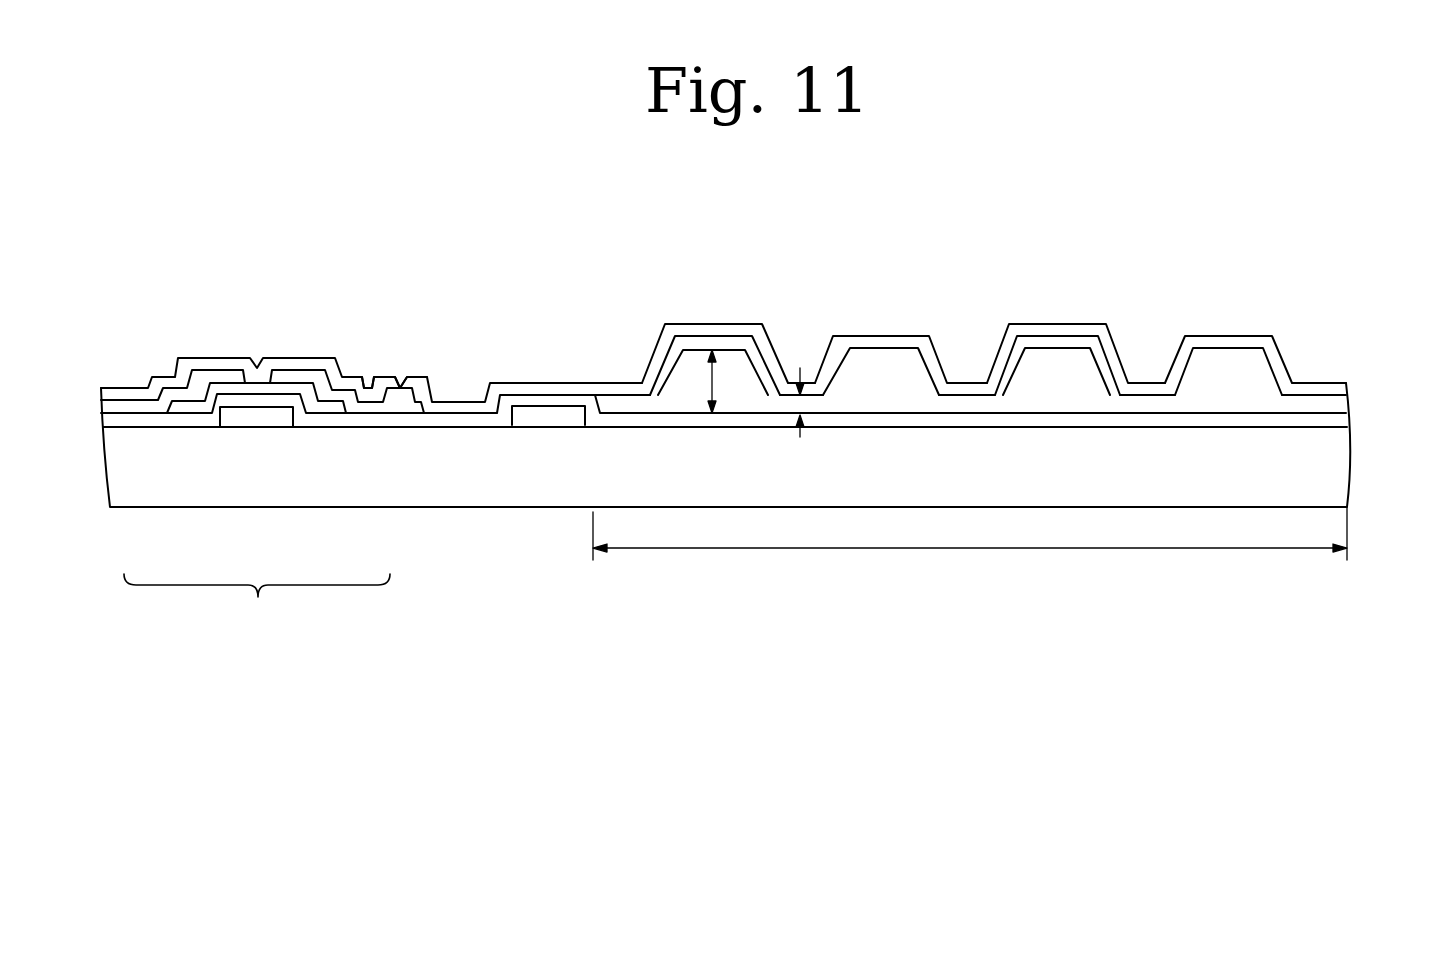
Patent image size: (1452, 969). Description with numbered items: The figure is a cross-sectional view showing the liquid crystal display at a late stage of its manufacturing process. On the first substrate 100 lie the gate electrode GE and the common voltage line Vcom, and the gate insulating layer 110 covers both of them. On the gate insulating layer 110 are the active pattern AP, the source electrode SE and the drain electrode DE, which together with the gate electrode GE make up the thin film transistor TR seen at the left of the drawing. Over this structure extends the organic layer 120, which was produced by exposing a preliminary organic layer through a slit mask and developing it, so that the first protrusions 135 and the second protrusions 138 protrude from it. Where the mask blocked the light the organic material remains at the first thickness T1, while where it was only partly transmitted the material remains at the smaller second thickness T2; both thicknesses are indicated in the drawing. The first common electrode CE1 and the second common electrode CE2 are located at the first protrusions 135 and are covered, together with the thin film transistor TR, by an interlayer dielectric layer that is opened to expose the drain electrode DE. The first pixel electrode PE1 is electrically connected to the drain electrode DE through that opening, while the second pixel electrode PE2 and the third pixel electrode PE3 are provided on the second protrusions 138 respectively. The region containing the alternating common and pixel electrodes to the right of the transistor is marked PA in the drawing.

The first substrate 100 is at (1337, 478).
The gate insulating layer 110 is at (1337, 422).
The organic layer 120 is at (1337, 403).
The first protrusions 135 is at (733, 347).
The second protrusions 138 is at (885, 343).
The gate electrode GE is at (263, 415).
The active pattern AP is at (190, 408).
The source electrode SE is at (142, 408).
The drain electrode DE is at (368, 410).
The thin film transistor TR is at (257, 603).
The first pixel electrode PE1 is at (418, 370).
The second pixel electrode PE2 is at (838, 340).
The third pixel electrode PE3 is at (1180, 342).
The first common electrode CE1 is at (699, 342).
The second common electrode CE2 is at (1043, 343).
The common voltage line Vcom is at (537, 415).
The first thickness T1 is at (730, 381).
The second thickness T2 is at (801, 387).
The pixel area PA is at (970, 548).